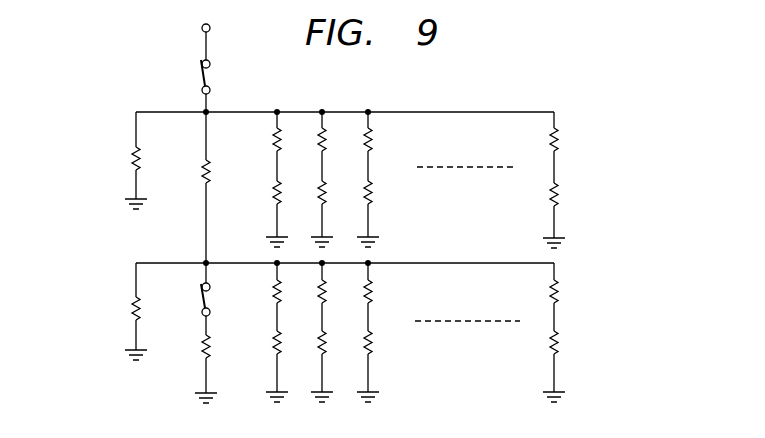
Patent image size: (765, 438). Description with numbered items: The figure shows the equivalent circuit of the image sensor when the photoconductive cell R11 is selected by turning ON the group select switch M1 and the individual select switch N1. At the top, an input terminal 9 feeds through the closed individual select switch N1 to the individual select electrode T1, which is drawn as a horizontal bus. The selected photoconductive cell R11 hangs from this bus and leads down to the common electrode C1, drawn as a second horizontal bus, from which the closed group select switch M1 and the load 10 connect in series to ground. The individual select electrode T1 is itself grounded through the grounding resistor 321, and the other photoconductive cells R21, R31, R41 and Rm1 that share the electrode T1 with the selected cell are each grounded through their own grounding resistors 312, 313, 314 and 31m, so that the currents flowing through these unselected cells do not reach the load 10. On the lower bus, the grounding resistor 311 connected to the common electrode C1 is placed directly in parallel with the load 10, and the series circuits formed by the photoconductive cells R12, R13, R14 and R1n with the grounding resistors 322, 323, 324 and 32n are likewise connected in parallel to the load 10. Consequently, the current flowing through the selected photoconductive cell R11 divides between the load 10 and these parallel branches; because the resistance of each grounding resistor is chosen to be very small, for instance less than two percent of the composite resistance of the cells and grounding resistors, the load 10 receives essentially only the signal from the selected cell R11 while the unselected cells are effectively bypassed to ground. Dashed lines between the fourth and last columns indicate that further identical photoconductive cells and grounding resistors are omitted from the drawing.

The input terminal 9 is at (202, 28).
The load 10 is at (204, 350).
The individual select switch N1 is at (202, 75).
The group select switch M1 is at (203, 295).
The individual select electrode T1 is at (294, 110).
The common electrode C1 is at (446, 262).
The photoconductive cell R11 is at (203, 178).
The photoconductive cell R21 is at (280, 148).
The photoconductive cell R31 is at (325, 148).
The photoconductive cell R41 is at (371, 148).
The photoconductive cell Rm1 is at (557, 148).
The photoconductive cell R12 is at (280, 300).
The photoconductive cell R13 is at (325, 300).
The photoconductive cell R14 is at (371, 300).
The photoconductive cell R1n is at (557, 300).
The grounding resistor 311 is at (133, 306).
The grounding resistor 312 is at (293, 190).
The grounding resistor 313 is at (338, 190).
The grounding resistor 314 is at (384, 190).
The grounding resistor 31m is at (570, 190).
The grounding resistor 321 is at (132, 158).
The grounding resistor 322 is at (293, 342).
The grounding resistor 323 is at (338, 342).
The grounding resistor 324 is at (384, 342).
The grounding resistor 32n is at (570, 342).